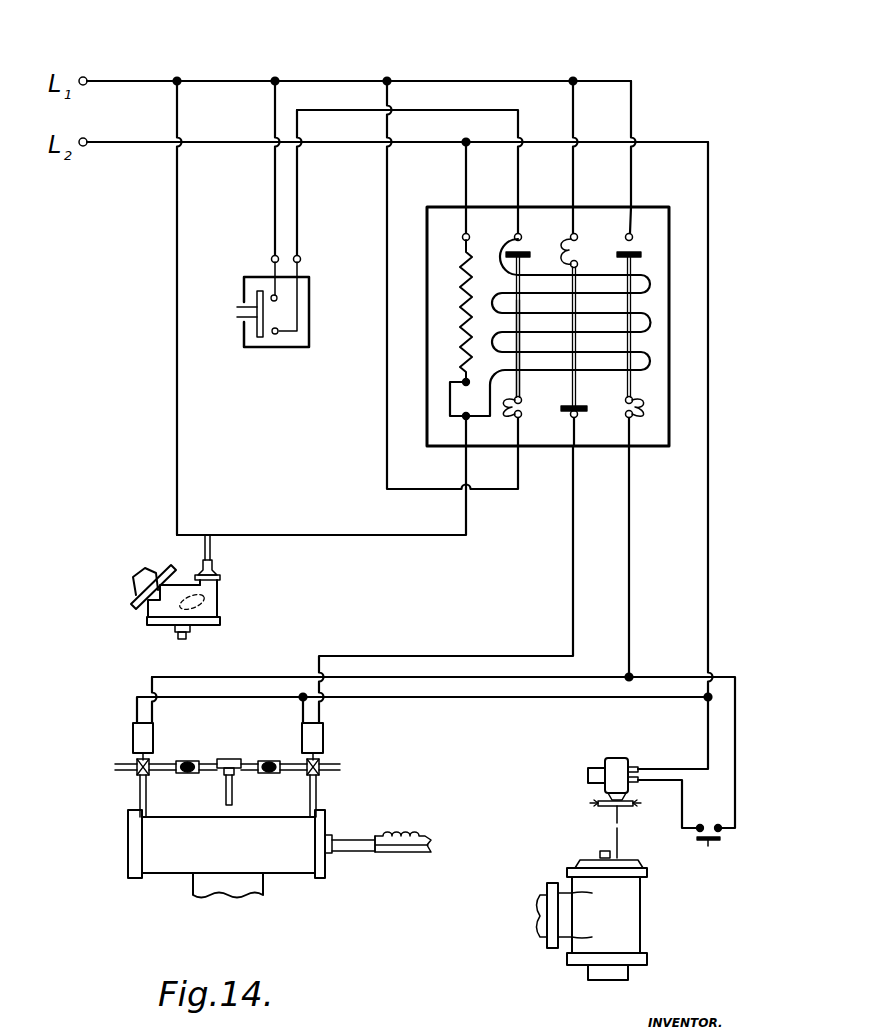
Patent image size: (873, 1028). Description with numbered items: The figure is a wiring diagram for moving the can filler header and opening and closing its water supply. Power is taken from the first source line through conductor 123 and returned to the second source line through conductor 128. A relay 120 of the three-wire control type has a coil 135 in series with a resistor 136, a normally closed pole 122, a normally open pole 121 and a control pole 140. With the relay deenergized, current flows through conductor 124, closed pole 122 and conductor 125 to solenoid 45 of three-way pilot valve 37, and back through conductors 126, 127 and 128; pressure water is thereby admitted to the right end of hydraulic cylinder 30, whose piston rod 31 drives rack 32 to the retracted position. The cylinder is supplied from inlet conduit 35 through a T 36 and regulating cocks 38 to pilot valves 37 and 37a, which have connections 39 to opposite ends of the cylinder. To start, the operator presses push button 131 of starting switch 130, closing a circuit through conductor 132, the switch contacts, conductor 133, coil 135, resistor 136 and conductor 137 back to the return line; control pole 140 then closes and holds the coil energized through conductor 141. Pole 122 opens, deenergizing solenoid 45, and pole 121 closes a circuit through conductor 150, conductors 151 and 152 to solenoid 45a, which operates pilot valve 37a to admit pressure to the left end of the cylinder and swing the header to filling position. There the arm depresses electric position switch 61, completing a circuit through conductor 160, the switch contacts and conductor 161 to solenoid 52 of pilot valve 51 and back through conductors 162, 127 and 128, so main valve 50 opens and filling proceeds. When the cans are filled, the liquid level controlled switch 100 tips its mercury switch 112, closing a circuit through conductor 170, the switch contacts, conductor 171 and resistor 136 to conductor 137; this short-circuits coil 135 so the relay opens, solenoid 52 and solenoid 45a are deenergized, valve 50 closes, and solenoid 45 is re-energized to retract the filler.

The conductor 123 is at (212, 80).
The conductor 128 is at (204, 146).
The conductor 124 is at (570, 91).
The conductor 150 is at (637, 95).
The conductor 137 is at (465, 167).
The coil 135 is at (516, 233).
The normally closed pole 122 is at (577, 267).
The normally open pole 121 is at (627, 389).
The control pole 140 is at (518, 375).
The relay 120 is at (674, 338).
The resistor 136 is at (461, 344).
The conductor 132 is at (274, 227).
The conductor 133 is at (298, 215).
The conductor 141 is at (384, 266).
The push button 131 is at (238, 312).
The starting switch 130 is at (287, 348).
The conductor 170 is at (175, 372).
The conductor 171 is at (333, 537).
The conductor 125 is at (568, 570).
The conductor 151 is at (631, 537).
The conductor 127 is at (712, 590).
The mercury switch 112 is at (205, 599).
The liquid level controlled switch 100 is at (164, 629).
The conductor 152 is at (262, 676).
The conductor 160 is at (652, 676).
The conductor 126 is at (480, 700).
The solenoid 45a is at (133, 746).
The solenoid 45 is at (325, 740).
The regulating cock 38 is at (187, 761).
The T 36 is at (232, 760).
The three-way pilot valve 37a is at (133, 761).
The three-way pilot valve 37 is at (325, 768).
The connection 39 is at (140, 793).
The inlet conduit 35 is at (226, 795).
The hydraulic cylinder 30 is at (175, 866).
The piston rod 31 is at (358, 852).
The rack 32 is at (410, 852).
The solenoid 52 is at (617, 758).
The conductor 162 is at (662, 769).
The three-way pilot valve 51 is at (600, 805).
The conductor 161 is at (680, 808).
The electric position switch 61 is at (702, 845).
The main valve 50 is at (628, 911).